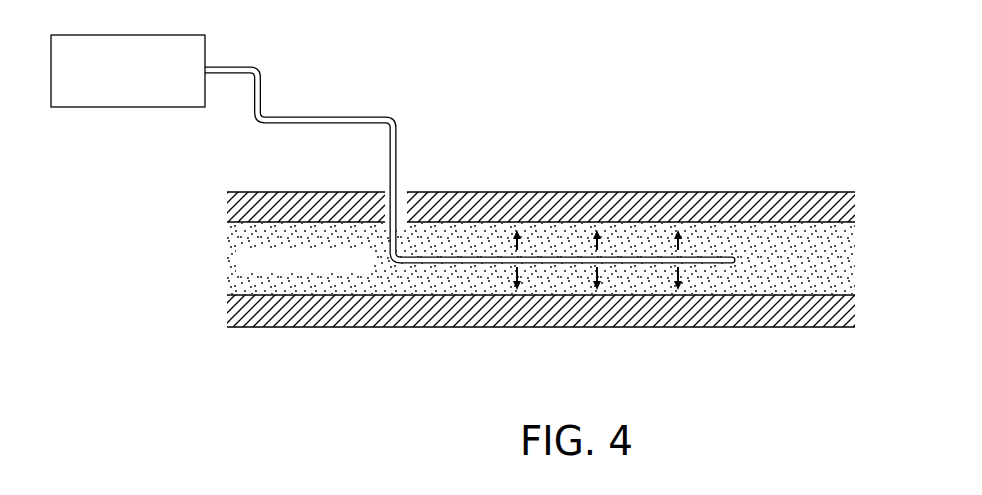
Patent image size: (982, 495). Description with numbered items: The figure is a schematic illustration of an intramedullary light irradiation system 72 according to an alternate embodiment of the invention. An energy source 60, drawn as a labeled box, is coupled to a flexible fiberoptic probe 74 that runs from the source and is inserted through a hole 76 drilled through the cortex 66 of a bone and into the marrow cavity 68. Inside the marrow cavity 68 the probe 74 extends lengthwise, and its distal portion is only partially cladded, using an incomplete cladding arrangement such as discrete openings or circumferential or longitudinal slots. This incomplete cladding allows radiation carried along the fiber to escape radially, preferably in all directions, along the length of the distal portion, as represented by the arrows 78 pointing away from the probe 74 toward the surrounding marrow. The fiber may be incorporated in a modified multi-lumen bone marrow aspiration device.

The energy source 60 is at (118, 107).
The cortex 66 is at (762, 191).
The marrow cavity 68 is at (817, 235).
The intramedullary light irradiation system 72 is at (460, 72).
The flexible fiberoptic probe 74 is at (468, 263).
The hole 76 is at (402, 190).
The arrows 78 is at (699, 279).